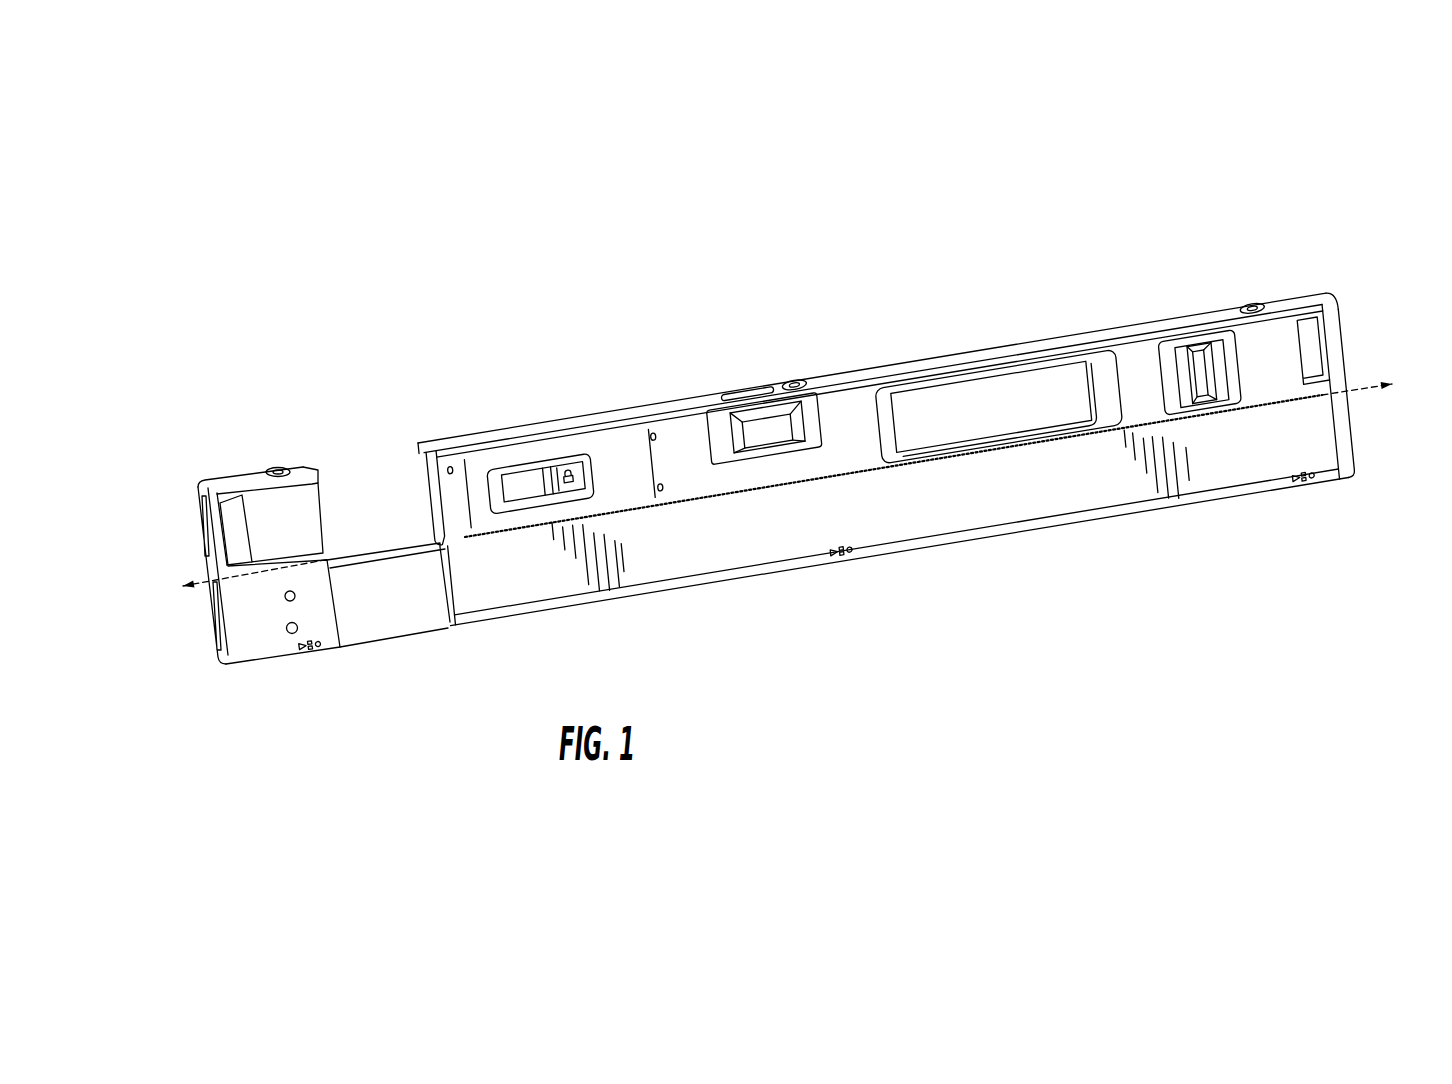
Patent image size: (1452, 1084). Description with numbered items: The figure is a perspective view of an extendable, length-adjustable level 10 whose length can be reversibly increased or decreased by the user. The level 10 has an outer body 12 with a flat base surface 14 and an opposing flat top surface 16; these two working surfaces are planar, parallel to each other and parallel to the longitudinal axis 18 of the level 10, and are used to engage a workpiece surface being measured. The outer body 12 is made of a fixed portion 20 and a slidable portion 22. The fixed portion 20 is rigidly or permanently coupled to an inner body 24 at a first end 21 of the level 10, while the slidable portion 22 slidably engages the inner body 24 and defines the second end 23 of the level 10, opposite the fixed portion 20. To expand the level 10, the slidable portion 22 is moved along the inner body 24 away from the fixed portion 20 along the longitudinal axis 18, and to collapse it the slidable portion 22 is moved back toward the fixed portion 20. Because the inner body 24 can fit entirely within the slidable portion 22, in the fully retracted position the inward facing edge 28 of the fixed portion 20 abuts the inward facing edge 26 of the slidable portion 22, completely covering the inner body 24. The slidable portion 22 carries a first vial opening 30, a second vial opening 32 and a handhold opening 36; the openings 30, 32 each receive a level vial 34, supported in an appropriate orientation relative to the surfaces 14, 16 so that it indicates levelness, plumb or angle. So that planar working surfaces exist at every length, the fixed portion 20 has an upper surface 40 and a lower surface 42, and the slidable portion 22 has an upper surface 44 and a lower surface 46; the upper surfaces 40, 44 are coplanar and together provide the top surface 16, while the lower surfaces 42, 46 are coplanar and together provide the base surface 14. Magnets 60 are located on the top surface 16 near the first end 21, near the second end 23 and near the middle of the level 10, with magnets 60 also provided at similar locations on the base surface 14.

The level 10 is at (783, 499).
The outer body 12 is at (1297, 448).
The base surface 14 is at (900, 552).
The top surface 16 is at (878, 350).
The longitudinal axis 18 is at (1366, 392).
The fixed portion 20 is at (287, 537).
The first end 21 is at (299, 556).
The slidable portion 22 is at (1267, 465).
The second end 23 is at (1381, 370).
The inner body 24 is at (389, 597).
The inward facing edge of slidable portion 26 is at (418, 491).
The inward facing edge of fixed portion 28 is at (327, 428).
The first vial opening 30 is at (996, 488).
The second vial opening 32 is at (1222, 457).
The level vial 34 is at (1205, 358).
The handhold opening 36 is at (999, 472).
The upper surface of fixed portion 40 is at (192, 538).
The lower surface of fixed portion 42 is at (272, 649).
The upper surface of slidable portion 44 is at (872, 350).
The lower surface of slidable portion 46 is at (897, 571).
The magnet 60 is at (807, 372).